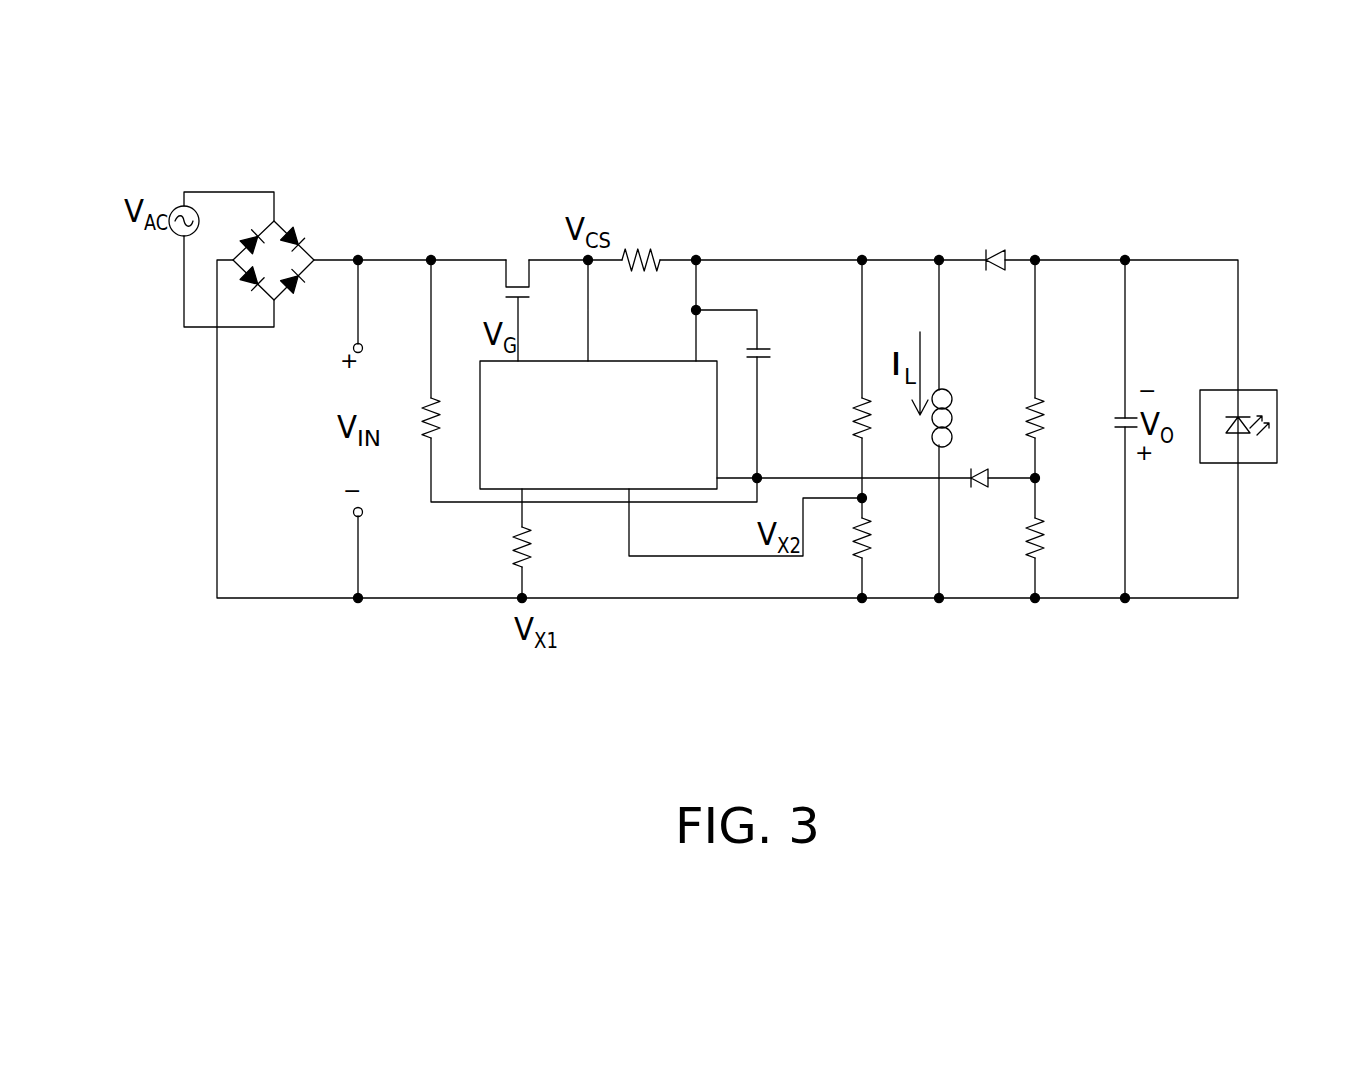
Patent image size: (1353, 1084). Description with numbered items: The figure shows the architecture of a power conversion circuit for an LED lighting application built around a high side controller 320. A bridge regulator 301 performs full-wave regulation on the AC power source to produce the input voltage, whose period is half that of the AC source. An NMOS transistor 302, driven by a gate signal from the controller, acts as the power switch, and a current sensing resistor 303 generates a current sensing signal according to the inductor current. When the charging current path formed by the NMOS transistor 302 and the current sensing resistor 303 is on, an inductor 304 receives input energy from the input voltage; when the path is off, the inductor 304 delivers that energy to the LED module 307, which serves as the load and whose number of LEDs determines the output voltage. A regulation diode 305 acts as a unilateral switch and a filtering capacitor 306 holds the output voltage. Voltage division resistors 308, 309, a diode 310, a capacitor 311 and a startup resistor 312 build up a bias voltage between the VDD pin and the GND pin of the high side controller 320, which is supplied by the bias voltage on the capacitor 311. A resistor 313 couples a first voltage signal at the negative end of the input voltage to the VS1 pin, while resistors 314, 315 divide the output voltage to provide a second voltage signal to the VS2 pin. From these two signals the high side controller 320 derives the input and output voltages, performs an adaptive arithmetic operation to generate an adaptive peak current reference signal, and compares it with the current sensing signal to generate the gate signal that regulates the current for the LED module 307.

The bridge regulator 301 is at (288, 226).
The NMOS transistor 302 is at (518, 265).
The current sensing resistor 303 is at (640, 250).
The inductor 304 is at (953, 412).
The regulation diode 305 is at (992, 248).
The filtering capacitor 306 is at (1131, 415).
The LED module 307 is at (1258, 400).
The voltage division resistor 308 is at (1046, 422).
The voltage division resistor 309 is at (1045, 535).
The diode 310 is at (978, 488).
The capacitor 311 is at (767, 349).
The startup resistor 312 is at (428, 402).
The resistor 313 is at (531, 548).
The resistor 314 is at (855, 415).
The resistor 315 is at (865, 552).
The high side controller 320 is at (487, 440).